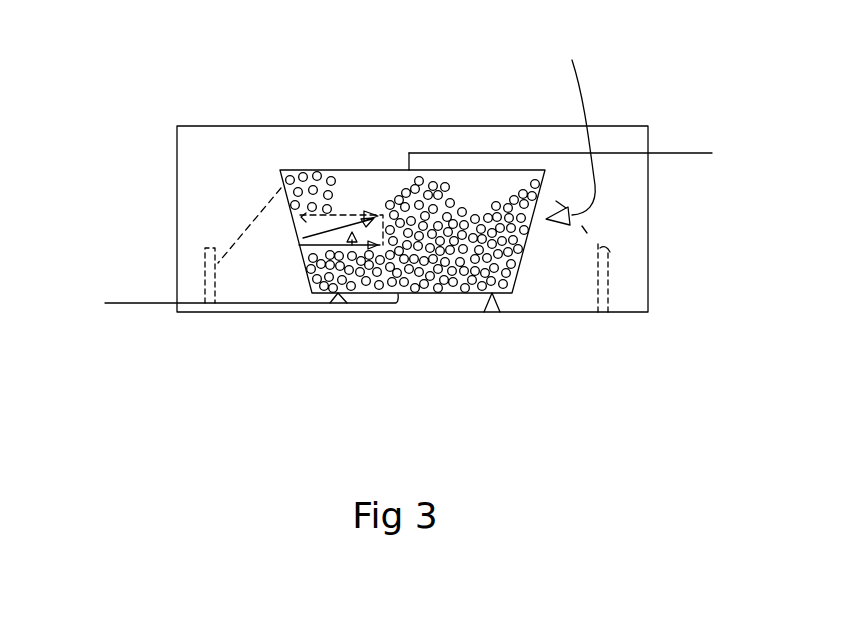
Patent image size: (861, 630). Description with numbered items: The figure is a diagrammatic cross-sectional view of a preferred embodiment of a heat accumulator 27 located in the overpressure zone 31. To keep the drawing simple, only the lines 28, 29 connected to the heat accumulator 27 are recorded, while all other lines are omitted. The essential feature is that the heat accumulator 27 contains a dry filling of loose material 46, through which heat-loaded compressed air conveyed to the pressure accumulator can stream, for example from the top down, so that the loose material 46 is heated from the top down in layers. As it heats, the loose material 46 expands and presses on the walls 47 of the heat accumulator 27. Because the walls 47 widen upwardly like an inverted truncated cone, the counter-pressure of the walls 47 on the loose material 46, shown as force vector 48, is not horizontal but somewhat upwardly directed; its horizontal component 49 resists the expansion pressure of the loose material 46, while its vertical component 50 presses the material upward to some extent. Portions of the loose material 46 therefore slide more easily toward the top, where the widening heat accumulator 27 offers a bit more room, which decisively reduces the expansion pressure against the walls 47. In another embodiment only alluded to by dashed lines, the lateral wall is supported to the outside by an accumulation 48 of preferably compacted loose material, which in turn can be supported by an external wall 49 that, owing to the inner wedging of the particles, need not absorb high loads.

The heat accumulator 27 is at (570, 129).
The line 28 is at (150, 303).
The line 29 is at (679, 153).
The overpressure zone 31 is at (308, 126).
The loose material 46 is at (470, 255).
The walls 47 is at (305, 268).
The force vector 48 is at (260, 210).
The horizontal component 49 is at (212, 277).
The vertical component 50 is at (297, 233).